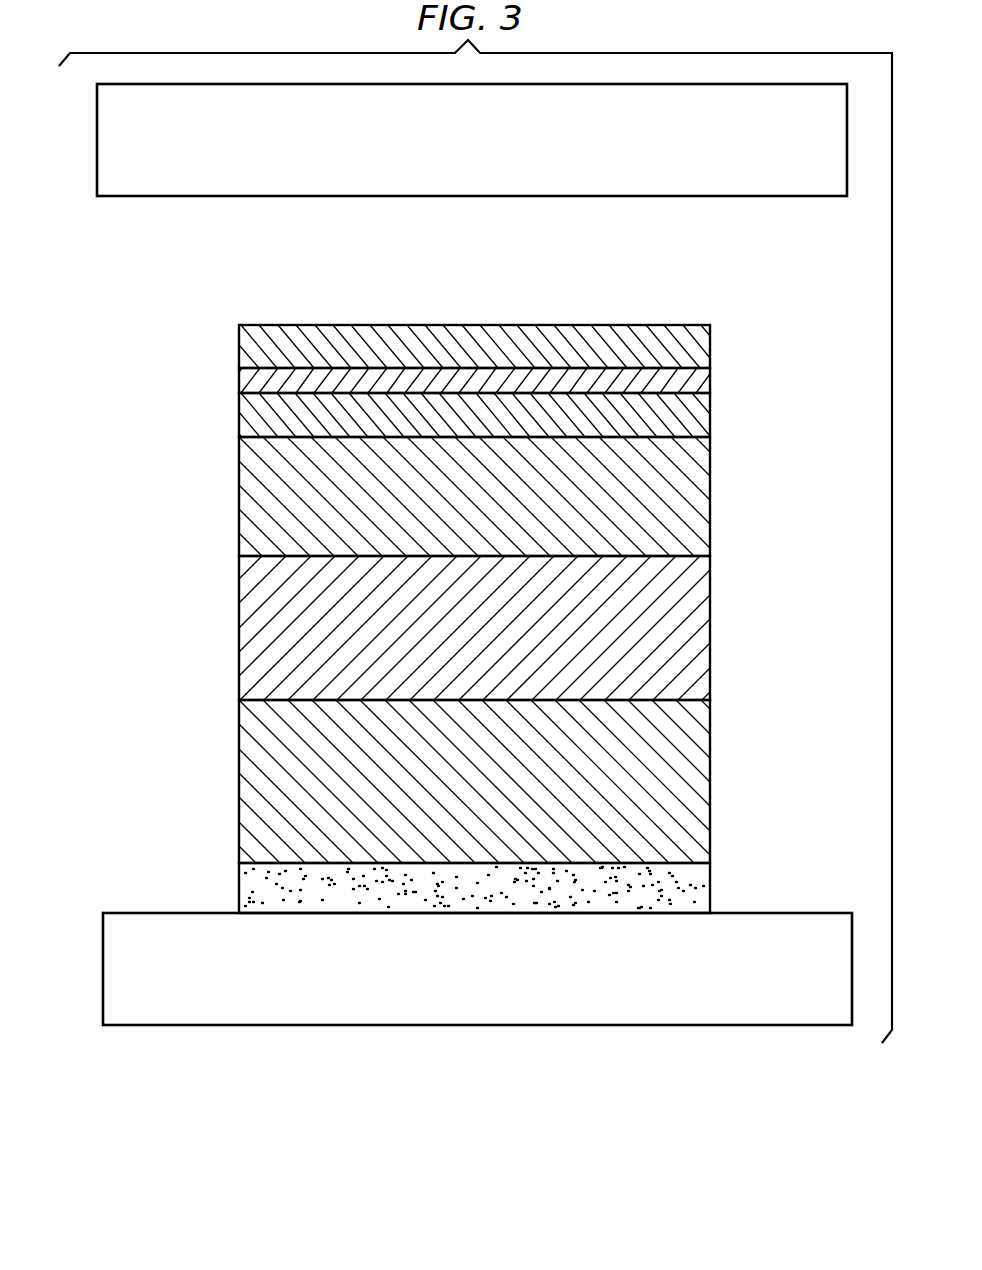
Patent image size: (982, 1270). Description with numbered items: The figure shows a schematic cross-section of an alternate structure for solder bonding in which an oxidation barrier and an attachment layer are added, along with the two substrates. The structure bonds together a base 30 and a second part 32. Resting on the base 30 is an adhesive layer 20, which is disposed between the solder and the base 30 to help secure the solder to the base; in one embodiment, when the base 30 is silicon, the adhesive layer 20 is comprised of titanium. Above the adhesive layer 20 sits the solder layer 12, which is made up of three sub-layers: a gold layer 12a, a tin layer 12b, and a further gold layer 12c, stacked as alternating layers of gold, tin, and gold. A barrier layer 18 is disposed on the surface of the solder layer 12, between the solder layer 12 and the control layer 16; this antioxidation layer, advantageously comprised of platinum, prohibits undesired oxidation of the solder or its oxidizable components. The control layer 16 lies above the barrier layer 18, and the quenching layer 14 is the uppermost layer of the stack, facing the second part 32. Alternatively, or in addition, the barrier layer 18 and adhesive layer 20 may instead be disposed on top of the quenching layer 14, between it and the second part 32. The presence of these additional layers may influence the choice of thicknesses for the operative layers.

The solder layer 12 is at (546, 648).
The gold layer 12a is at (513, 781).
The tin layer 12b is at (697, 628).
The gold layer 12c is at (697, 500).
The quenching layer 14 is at (697, 350).
The control layer 16 is at (697, 388).
The barrier layer 18 is at (697, 423).
The adhesive layer 20 is at (697, 903).
The base 30 is at (830, 927).
The second part 32 is at (826, 176).